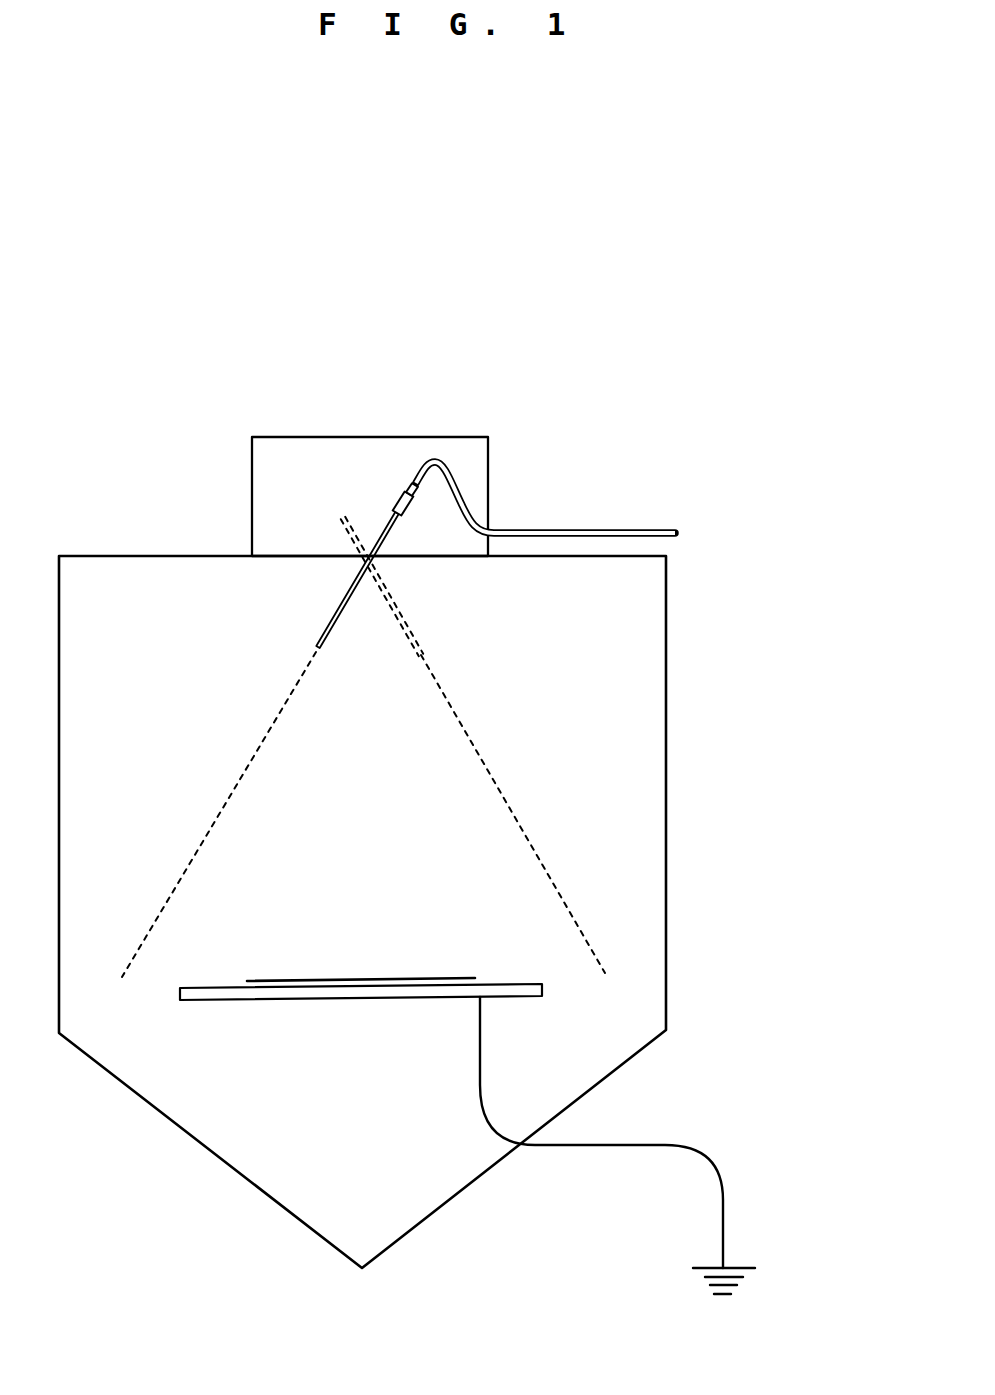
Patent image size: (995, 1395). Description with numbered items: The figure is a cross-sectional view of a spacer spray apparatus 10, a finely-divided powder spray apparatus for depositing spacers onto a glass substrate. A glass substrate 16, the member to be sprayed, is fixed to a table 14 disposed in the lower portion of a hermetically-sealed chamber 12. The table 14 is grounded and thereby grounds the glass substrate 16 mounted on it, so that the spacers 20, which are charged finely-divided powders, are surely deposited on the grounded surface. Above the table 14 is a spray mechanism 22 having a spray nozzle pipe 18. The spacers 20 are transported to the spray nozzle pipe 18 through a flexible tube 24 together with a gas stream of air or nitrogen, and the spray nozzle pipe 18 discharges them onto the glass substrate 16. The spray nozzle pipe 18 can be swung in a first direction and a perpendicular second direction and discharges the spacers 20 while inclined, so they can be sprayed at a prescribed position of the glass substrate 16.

The spacer spray apparatus 10 is at (456, 912).
The hermetically-sealed chamber 12 is at (668, 808).
The table 14 is at (292, 997).
The glass substrate 16 is at (330, 978).
The spray nozzle pipe 18 is at (333, 616).
The spacers 20 is at (250, 758).
The spray mechanism 22 is at (523, 438).
The flexible tube 24 is at (587, 527).